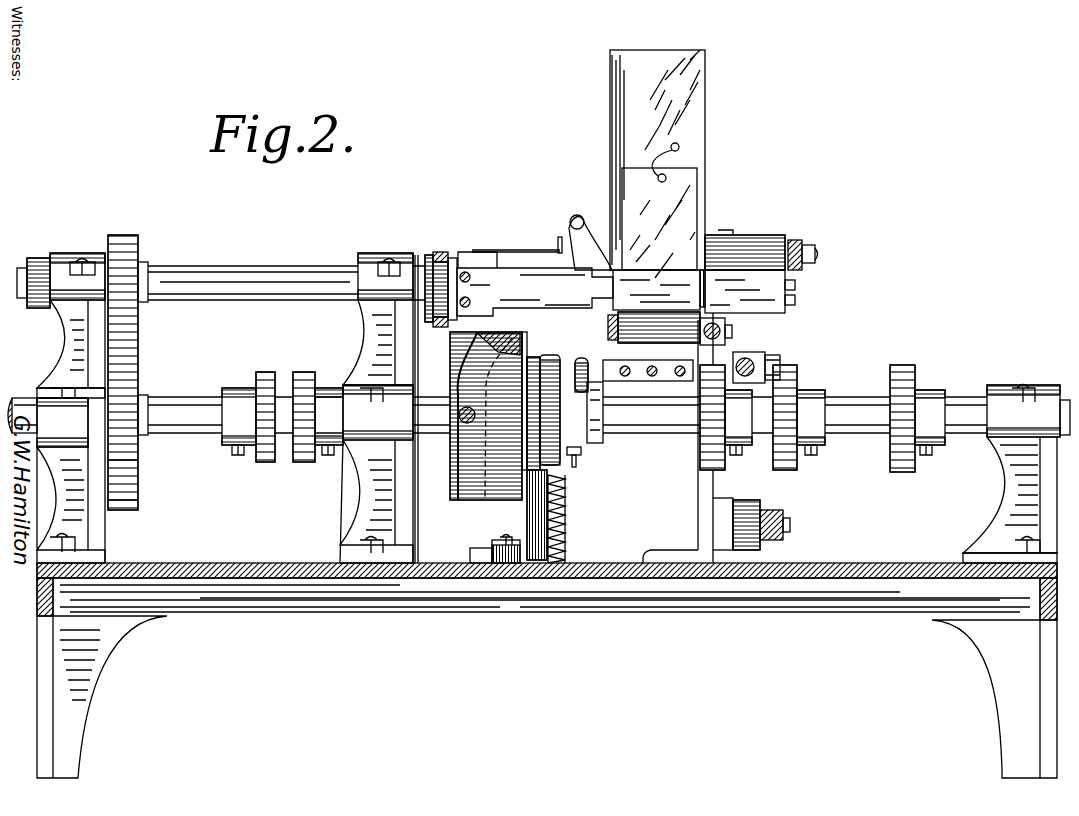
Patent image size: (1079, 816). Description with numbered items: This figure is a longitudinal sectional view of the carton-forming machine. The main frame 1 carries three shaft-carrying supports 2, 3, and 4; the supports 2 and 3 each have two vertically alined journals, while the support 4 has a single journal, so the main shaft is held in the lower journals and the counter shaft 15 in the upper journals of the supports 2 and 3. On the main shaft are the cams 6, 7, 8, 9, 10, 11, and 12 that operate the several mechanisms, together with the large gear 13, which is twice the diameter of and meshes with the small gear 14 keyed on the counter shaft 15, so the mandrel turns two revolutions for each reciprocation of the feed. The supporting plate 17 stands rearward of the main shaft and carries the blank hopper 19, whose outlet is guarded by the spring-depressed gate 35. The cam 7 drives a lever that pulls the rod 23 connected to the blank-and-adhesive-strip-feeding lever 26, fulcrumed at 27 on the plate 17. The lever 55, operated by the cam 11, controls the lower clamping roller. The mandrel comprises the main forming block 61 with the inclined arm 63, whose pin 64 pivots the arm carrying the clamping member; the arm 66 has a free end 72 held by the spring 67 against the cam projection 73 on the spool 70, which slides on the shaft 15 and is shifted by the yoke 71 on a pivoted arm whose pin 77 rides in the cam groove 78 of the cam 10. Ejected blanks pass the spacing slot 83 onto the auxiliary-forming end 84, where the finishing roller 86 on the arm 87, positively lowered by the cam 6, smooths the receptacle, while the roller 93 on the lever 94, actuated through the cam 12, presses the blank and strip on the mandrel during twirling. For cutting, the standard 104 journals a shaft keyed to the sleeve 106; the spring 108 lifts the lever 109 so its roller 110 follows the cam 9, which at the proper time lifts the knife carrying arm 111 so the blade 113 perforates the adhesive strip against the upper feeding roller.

The main frame 1 is at (392, 605).
The shaft-carrying support 2 is at (97, 528).
The shaft-carrying support 3 is at (385, 500).
The shaft-carrying support 4 is at (1002, 487).
The cam 6 is at (917, 378).
The cam 7 is at (790, 388).
The cam 8 is at (702, 455).
The cam 9 is at (545, 445).
The cam 10 is at (493, 497).
The cam 11 is at (303, 370).
The cam 12 is at (253, 368).
The large gear 13 is at (138, 470).
The small gear 14 is at (140, 240).
The counter shaft 15 is at (238, 272).
The supporting plate 17 is at (700, 510).
The blank hopper 19 is at (694, 101).
The rod 23 is at (783, 357).
The blank-and-adhesive-strip-feeding lever 26 is at (727, 486).
The fulcrum 27 is at (783, 521).
The spring-depressed gate 35 is at (683, 190).
The lever 55 is at (733, 329).
The main forming block 61 is at (592, 292).
The inclined arm 63 is at (590, 219).
The pin 64 is at (569, 221).
The arm 66 is at (497, 248).
The spring 67 is at (558, 238).
The spool 70 is at (426, 254).
The yoke 71 is at (436, 252).
The free end 72 is at (450, 253).
The cam projection 73 is at (466, 252).
The pin 77 is at (462, 420).
The cam groove 78 is at (470, 367).
The spacing slot 83 is at (740, 240).
The auxiliary-forming end 84 is at (780, 300).
The finishing roller 86 is at (707, 270).
The arm 87 is at (800, 248).
The roller 93 is at (660, 310).
The lever 94 is at (620, 388).
The standard 104 is at (510, 563).
The sleeve 106 is at (558, 353).
The spring 108 is at (570, 490).
The lever 109 is at (581, 462).
The roller 110 is at (565, 525).
The knife carrying arm 111 is at (597, 363).
The blade 113 is at (648, 362).